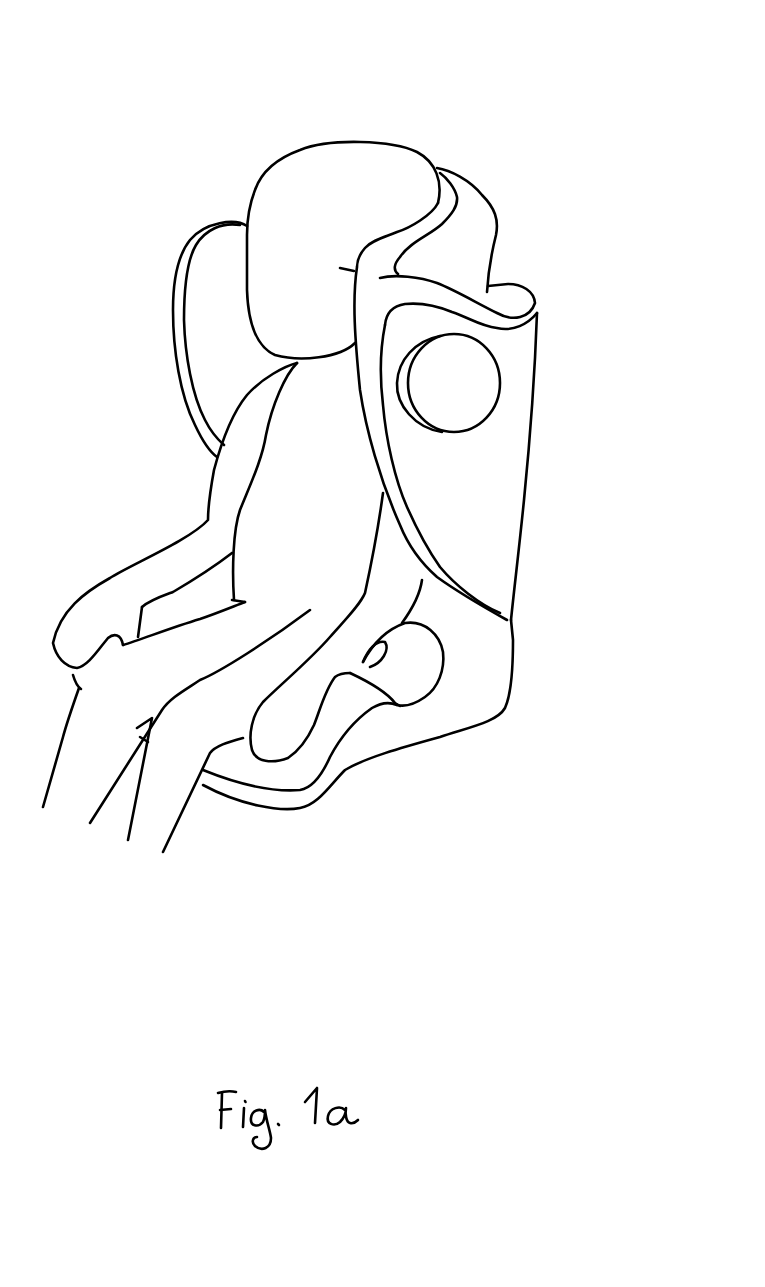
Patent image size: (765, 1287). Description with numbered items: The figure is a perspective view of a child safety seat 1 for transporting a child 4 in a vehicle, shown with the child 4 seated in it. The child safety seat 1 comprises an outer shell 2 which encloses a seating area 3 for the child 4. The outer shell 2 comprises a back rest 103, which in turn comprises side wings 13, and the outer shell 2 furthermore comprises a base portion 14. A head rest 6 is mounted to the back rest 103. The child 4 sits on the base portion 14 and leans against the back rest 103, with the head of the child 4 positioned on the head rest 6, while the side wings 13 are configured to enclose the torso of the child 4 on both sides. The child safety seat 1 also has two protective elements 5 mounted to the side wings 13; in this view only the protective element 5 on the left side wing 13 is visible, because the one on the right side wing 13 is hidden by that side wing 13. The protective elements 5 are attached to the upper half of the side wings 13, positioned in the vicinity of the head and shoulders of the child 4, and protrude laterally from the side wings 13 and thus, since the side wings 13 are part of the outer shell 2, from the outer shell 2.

The child safety seat 1 is at (141, 33).
The outer shell 2 is at (497, 580).
The seating area 3 is at (211, 317).
The child 4 is at (298, 566).
The protective element 5 is at (457, 392).
The head rest 6 is at (462, 267).
The side wing 13 is at (216, 377).
The base portion 14 is at (435, 715).
The back rest 103 is at (523, 347).